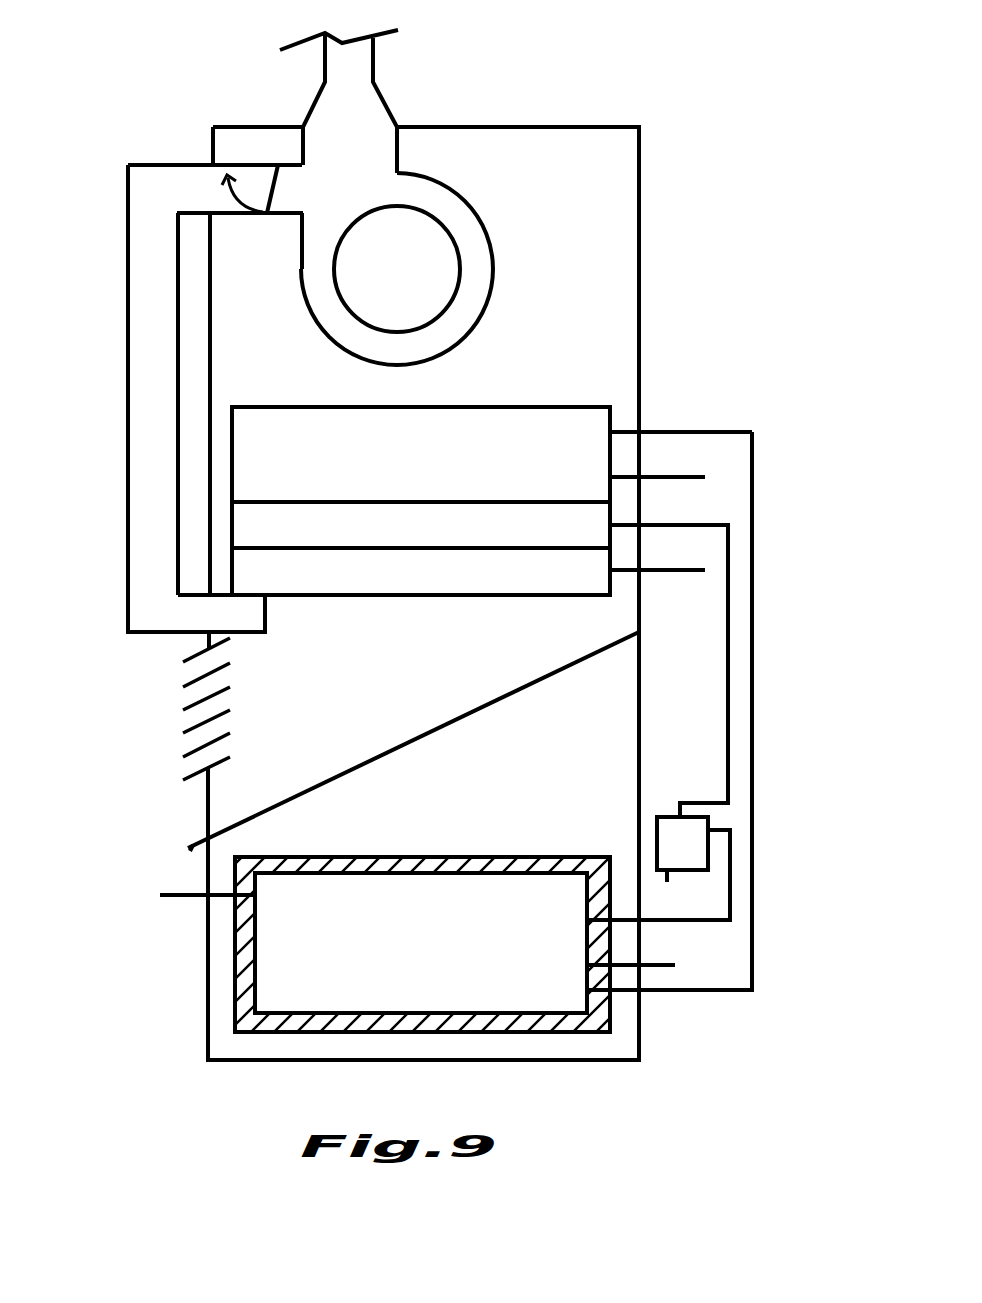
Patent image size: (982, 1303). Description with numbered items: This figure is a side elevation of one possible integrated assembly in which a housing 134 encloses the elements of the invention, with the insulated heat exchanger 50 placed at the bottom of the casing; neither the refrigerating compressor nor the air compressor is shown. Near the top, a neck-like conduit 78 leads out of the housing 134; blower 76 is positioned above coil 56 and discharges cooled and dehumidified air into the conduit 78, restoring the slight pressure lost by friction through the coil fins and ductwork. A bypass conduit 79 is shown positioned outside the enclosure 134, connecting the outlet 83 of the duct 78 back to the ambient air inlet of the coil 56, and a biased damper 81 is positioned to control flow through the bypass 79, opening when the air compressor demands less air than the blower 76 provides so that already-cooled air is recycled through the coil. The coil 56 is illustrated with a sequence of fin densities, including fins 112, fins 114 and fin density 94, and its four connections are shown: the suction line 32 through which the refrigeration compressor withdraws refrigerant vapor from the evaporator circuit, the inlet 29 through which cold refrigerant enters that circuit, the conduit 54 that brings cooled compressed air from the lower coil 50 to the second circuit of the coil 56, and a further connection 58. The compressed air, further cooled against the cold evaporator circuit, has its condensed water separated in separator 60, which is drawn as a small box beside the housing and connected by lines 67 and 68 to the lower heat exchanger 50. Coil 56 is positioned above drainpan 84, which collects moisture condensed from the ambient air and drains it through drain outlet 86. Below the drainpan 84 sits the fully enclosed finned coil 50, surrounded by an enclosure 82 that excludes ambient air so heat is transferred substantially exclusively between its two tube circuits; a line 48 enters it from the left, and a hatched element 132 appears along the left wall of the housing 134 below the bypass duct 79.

The conduit 78 is at (373, 58).
The biased damper 81 is at (268, 190).
The housing 134 is at (639, 240).
The blower fan 76 is at (492, 270).
The fin density 94 is at (487, 428).
The coil 56 is at (421, 501).
The suction line 32 is at (678, 475).
The supply line 58 is at (712, 522).
The conduit 54 is at (752, 565).
The inlet 29 is at (682, 575).
The bypass conduit 79 is at (130, 593).
The outlet 83 is at (268, 613).
The fins 112 is at (370, 528).
The fins 114 is at (477, 582).
The spring 132 is at (190, 707).
The drainpan 84 is at (323, 788).
The drain outlet 86 is at (190, 848).
The enclosure 82 is at (450, 857).
The separator 60 is at (670, 838).
The connecting line 67 is at (728, 905).
The outlet pipe 68 is at (665, 968).
The inlet pipe 48 is at (190, 900).
The heat exchanger 50 is at (421, 943).